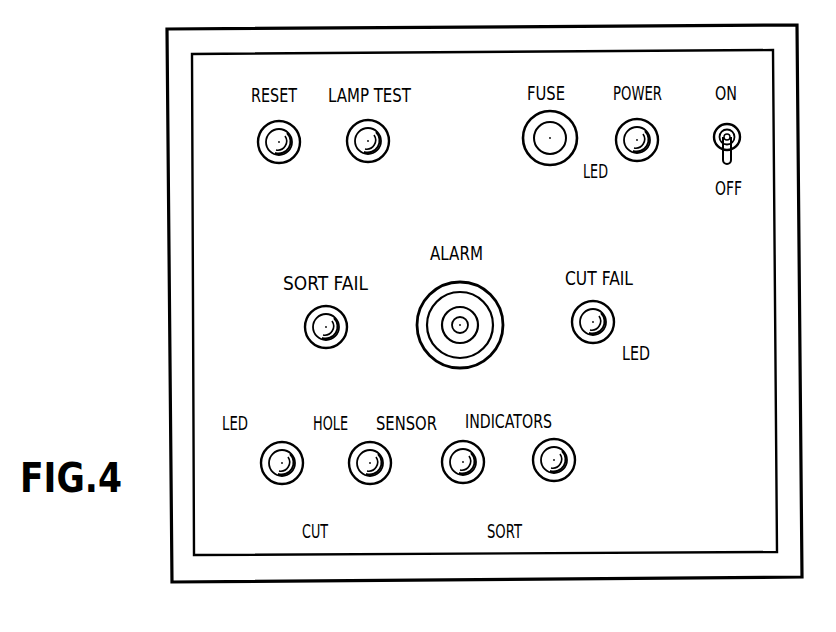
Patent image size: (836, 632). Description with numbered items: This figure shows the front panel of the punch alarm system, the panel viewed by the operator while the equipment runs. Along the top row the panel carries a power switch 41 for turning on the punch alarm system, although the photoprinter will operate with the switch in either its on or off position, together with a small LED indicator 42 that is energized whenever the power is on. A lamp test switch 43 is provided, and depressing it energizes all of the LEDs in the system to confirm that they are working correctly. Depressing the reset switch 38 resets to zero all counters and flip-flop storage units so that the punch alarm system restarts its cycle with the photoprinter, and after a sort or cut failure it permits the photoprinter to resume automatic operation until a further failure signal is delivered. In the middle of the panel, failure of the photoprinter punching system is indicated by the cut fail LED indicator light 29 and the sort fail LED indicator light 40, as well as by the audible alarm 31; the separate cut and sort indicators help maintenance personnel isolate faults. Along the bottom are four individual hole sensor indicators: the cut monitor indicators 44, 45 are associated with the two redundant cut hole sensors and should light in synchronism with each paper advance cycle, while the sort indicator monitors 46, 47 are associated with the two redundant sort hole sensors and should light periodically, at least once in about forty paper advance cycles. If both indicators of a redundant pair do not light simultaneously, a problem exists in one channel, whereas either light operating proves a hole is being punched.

The reset switch 38 is at (282, 150).
The lamp test switch 43 is at (371, 149).
The LED indicator 42 is at (615, 170).
The power switch 41 is at (739, 138).
The audible alarm 31 is at (490, 295).
The sort fail LED indicator light 40 is at (318, 332).
The cut fail LED indicator light 29 is at (617, 355).
The hole sensor indicator 44 is at (253, 425).
The hole sensor indicator 45 is at (375, 475).
The hole sensor indicator 46 is at (462, 470).
The hole sensor indicator 47 is at (550, 475).